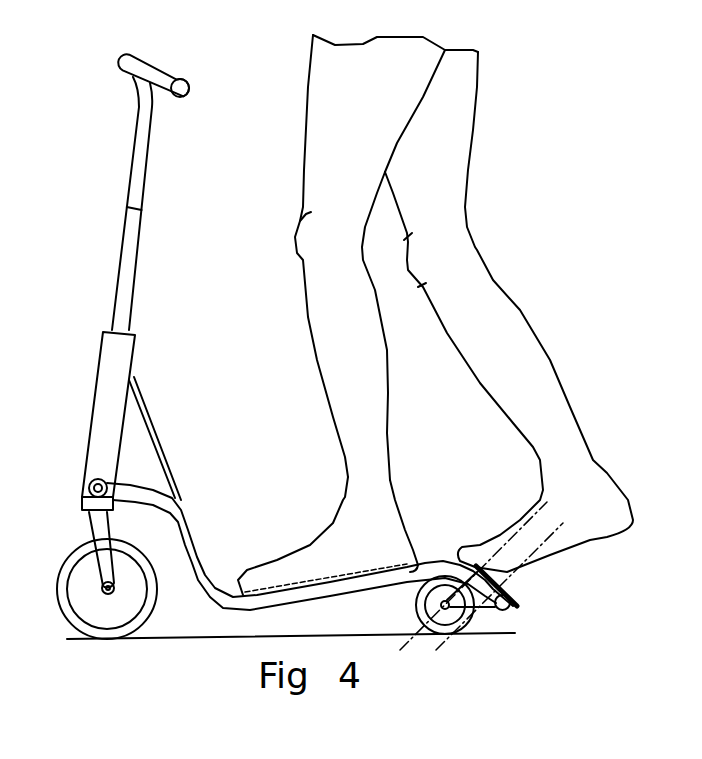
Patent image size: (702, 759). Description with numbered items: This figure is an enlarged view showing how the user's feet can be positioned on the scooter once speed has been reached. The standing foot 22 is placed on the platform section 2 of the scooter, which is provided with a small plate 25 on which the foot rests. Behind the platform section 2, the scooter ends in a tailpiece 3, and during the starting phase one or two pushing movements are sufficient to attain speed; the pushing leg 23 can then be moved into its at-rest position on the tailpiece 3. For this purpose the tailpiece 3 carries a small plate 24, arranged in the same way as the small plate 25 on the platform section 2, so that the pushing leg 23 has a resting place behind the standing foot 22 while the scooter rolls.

The platform section 2 is at (348, 590).
The tailpiece 3 is at (508, 607).
The standing foot 22 is at (322, 545).
The pushing leg 23 is at (550, 360).
The small plate 24 is at (512, 572).
The small plate 25 is at (438, 557).